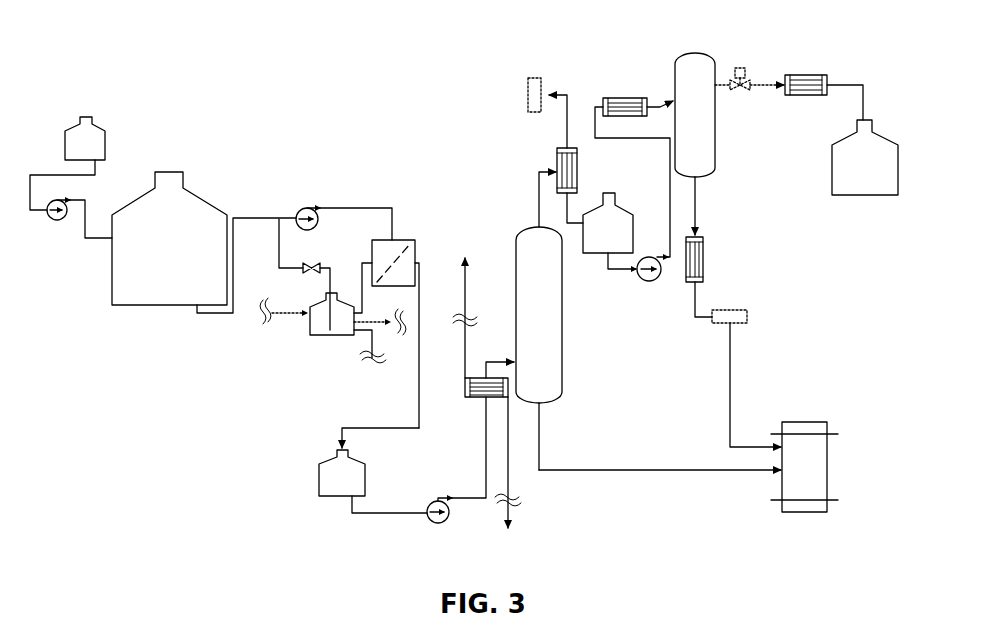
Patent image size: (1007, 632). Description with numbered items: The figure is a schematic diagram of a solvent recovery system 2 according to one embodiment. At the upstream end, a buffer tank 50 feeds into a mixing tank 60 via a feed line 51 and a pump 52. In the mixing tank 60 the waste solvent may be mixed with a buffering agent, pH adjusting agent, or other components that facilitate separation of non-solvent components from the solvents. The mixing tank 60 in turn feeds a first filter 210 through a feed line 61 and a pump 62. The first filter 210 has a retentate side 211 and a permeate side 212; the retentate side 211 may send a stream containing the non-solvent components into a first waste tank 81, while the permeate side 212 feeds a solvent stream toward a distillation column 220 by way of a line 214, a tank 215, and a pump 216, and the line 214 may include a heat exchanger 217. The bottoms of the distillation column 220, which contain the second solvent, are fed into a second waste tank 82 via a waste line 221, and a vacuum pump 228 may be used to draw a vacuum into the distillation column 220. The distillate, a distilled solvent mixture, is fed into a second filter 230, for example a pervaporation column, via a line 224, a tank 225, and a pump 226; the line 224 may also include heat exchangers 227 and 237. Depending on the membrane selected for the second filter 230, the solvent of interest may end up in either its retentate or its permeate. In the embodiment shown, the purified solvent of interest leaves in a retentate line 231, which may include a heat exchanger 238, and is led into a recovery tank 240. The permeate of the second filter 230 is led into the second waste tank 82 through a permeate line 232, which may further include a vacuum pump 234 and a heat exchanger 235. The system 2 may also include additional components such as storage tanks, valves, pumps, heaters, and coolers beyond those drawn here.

The system 2 is at (190, 50).
The buffer tank 50 is at (87, 115).
The feed line 51 is at (100, 238).
The pump 52 is at (56, 222).
The mixing tank 60 is at (172, 172).
The feed line 61 is at (254, 218).
The pump 62 is at (312, 207).
The first waste tank 81 is at (315, 338).
The second waste tank 82 is at (805, 422).
The first filter 210 is at (403, 240).
The retentate side 211 is at (383, 258).
The permeate side 212 is at (403, 270).
The line 214 is at (380, 428).
The tank 215 is at (319, 481).
The pump 216 is at (441, 497).
The heat exchanger 217 is at (465, 395).
The distillation column 220 is at (548, 350).
The waste line 221 is at (645, 470).
The line 224 is at (539, 192).
The tank 225 is at (627, 244).
The pump 226 is at (646, 283).
The heat exchanger 227 is at (557, 153).
The vacuum pump 228 is at (527, 80).
The second filter 230 is at (706, 145).
The retentate line 231 is at (845, 85).
The permeate line 232 is at (698, 208).
The vacuum pump 234 is at (750, 318).
The heat exchanger 235 is at (705, 260).
The heat exchanger 237 is at (627, 98).
The heat exchanger 238 is at (805, 75).
The recovery tank 240 is at (878, 165).